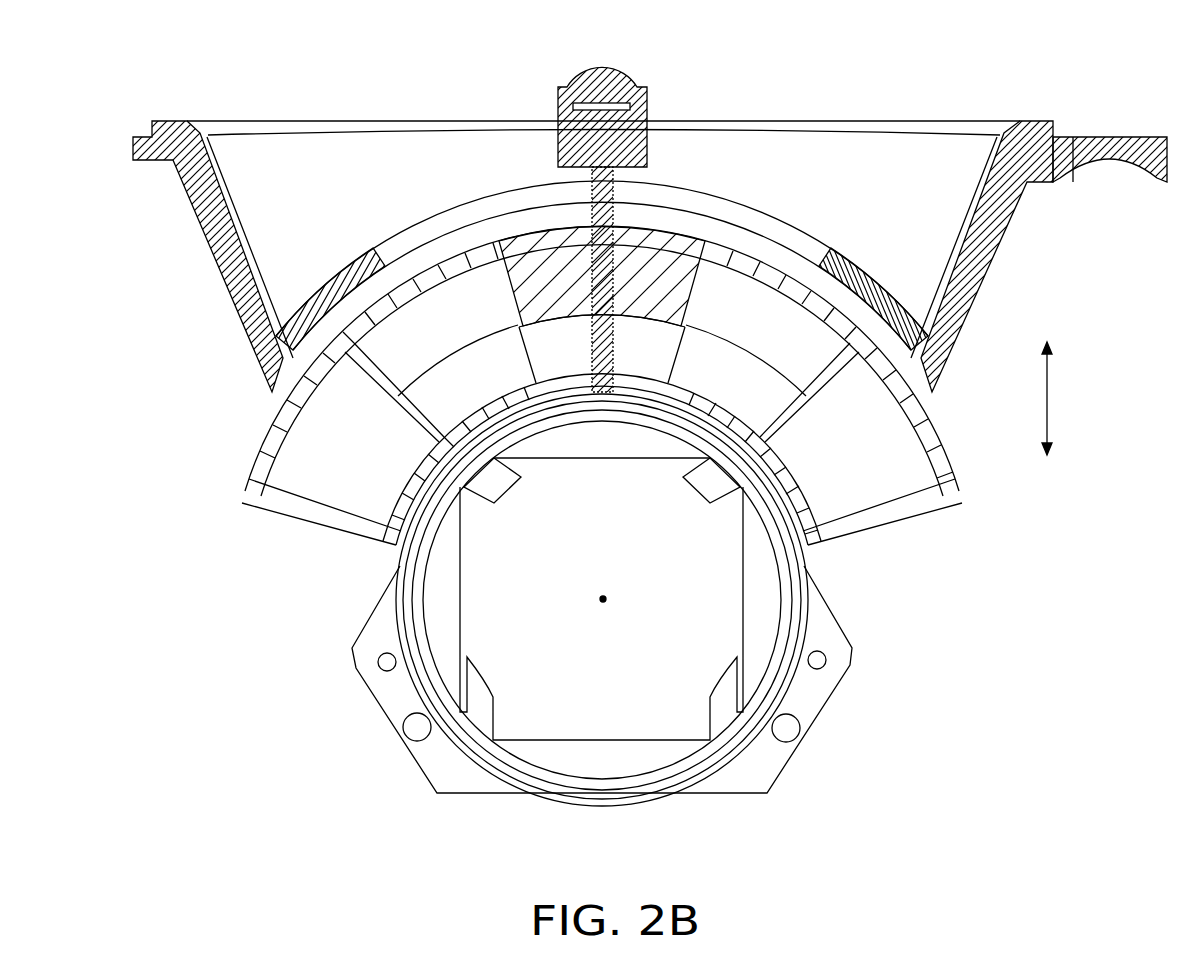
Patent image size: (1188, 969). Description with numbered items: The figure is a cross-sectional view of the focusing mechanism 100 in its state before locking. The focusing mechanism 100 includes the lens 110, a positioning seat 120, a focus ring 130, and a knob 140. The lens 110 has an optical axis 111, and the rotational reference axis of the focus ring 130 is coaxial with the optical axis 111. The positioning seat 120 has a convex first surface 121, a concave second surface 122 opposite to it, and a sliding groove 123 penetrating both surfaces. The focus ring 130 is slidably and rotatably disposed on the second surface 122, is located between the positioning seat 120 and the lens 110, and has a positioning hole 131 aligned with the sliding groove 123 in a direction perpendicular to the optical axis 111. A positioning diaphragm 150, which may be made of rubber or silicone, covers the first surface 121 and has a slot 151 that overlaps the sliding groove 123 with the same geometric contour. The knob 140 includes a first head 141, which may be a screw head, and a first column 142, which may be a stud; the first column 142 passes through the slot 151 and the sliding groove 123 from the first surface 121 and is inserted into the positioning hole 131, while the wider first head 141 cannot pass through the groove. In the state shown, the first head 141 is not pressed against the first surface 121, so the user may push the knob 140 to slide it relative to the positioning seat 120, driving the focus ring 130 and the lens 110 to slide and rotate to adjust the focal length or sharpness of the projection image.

The focusing mechanism 100 is at (1172, 848).
The lens 110 is at (727, 598).
The optical axis 111 is at (605, 606).
The positioning seat 120 is at (970, 283).
The first surface 121 is at (360, 263).
The second surface 122 is at (312, 345).
The sliding groove 123 is at (737, 223).
The focus ring 130 is at (639, 316).
The positioning hole 131 is at (552, 248).
The knob 140 is at (570, 207).
The first head 141 is at (643, 107).
The first column 142 is at (597, 290).
The positioning diaphragm 150 is at (867, 265).
The slot 151 is at (793, 232).